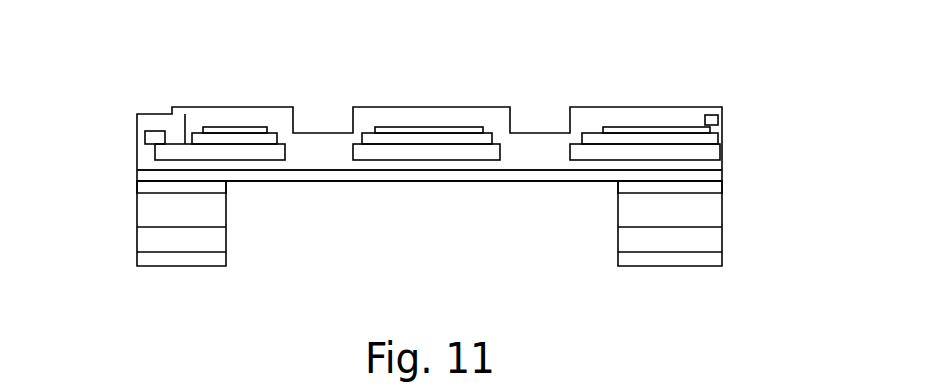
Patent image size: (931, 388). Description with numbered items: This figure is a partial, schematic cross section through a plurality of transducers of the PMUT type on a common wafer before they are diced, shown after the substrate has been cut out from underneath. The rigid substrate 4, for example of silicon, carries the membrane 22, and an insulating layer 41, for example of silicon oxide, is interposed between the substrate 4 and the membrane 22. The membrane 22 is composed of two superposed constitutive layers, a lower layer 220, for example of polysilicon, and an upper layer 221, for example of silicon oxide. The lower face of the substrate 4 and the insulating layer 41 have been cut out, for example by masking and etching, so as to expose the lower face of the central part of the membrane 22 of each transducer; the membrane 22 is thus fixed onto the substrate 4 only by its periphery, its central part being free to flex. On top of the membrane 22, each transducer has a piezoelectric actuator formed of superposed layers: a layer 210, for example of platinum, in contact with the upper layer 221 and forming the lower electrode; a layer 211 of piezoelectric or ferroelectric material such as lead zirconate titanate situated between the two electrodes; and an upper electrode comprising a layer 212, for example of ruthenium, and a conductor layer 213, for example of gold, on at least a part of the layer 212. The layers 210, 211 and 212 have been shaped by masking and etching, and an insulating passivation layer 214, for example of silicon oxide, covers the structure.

The rigid substrate 4 is at (147, 217).
The insulating layer 41 is at (148, 186).
The membrane 22 is at (812, 160).
The lower layer 220 is at (705, 176).
The upper layer 221 is at (702, 167).
The lower electrode layer 210 is at (280, 146).
The piezoelectric layer 211 is at (205, 127).
The upper electrode layer 212 is at (230, 133).
The conductor layer 213 is at (142, 130).
The insulating passivation layer 214 is at (200, 110).